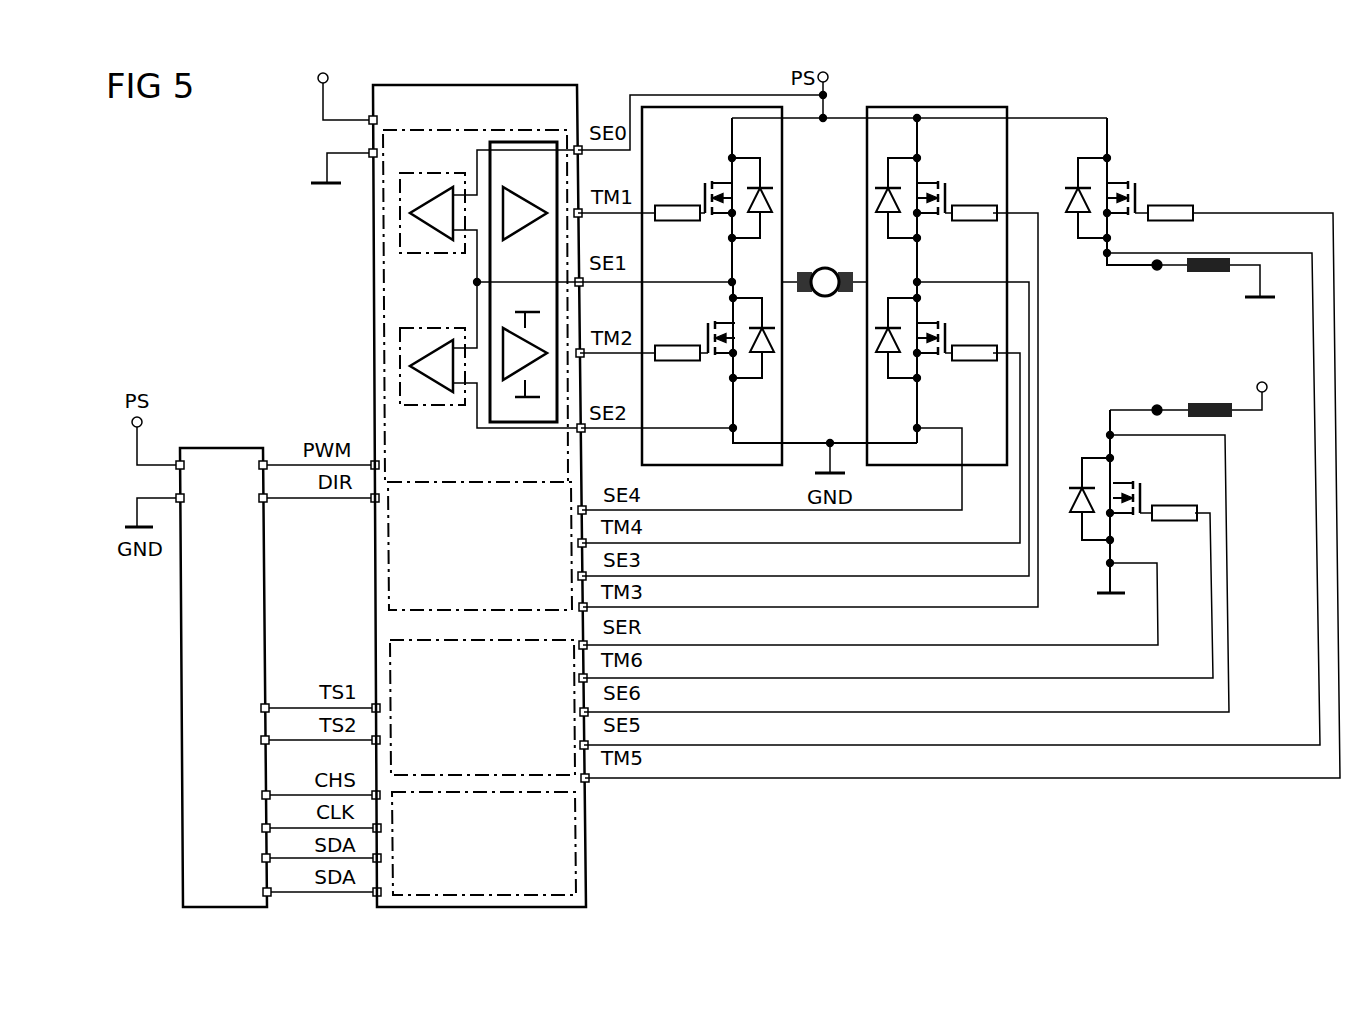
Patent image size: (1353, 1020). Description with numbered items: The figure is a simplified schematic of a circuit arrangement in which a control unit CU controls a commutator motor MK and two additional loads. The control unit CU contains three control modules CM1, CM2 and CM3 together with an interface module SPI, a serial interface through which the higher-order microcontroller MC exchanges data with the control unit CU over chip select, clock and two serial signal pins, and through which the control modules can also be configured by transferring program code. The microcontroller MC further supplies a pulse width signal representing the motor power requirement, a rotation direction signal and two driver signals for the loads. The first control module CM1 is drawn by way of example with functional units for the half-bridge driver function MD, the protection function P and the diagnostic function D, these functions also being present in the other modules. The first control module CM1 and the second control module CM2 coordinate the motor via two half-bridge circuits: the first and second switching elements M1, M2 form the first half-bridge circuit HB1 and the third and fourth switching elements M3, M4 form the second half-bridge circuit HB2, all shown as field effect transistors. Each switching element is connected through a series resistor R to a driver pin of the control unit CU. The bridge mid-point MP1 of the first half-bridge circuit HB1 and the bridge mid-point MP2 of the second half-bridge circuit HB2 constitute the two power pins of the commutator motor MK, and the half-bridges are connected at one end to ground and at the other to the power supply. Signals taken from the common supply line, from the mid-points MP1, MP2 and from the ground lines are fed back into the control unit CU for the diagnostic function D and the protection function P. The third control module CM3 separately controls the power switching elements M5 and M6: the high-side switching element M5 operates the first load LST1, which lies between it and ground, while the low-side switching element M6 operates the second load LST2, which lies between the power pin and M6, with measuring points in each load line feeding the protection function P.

The control unit CU is at (437, 487).
The microcontroller MC is at (223, 677).
The half-bridge driver function MD is at (523, 282).
The diagnostic function D is at (432, 253).
The protection function P is at (432, 405).
The first control module CM1 is at (480, 306).
The second control module CM2 is at (480, 546).
The third control module CM3 is at (482, 707).
The interface module SPI is at (484, 843).
The first switching element M1 is at (720, 170).
The second switching element M2 is at (720, 374).
The third switching element M3 is at (936, 175).
The fourth switching element M4 is at (943, 384).
The power switching element M5 is at (1128, 153).
The power switching element M6 is at (1098, 438).
The series resistor R is at (678, 205).
The bridge mid-point MP1 is at (730, 282).
The bridge mid-point MP2 is at (919, 282).
The commutator motor MK is at (824, 268).
The first half-bridge circuit HB1 is at (782, 362).
The second half-bridge circuit HB2 is at (867, 422).
The first load LST1 is at (1211, 272).
The second load LST2 is at (1223, 403).